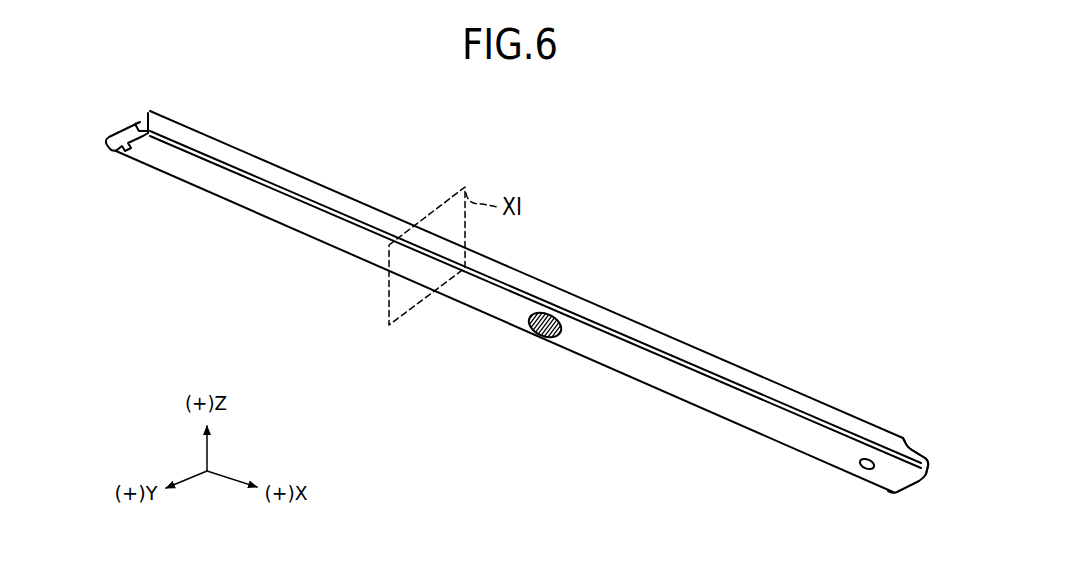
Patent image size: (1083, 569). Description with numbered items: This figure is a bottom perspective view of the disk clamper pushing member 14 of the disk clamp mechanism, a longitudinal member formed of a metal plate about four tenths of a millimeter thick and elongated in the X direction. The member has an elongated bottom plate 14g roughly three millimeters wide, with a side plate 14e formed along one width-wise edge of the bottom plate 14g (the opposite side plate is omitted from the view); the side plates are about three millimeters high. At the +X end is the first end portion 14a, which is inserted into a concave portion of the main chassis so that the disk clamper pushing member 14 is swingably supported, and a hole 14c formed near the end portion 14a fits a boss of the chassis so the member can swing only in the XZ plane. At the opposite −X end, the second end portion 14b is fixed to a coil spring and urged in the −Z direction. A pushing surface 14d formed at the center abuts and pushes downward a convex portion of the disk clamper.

The disk clamper pushing member 14 is at (667, 335).
The first end portion 14a is at (913, 452).
The second end portion 14b is at (138, 122).
The hole 14c is at (866, 471).
The pushing surface 14d is at (546, 337).
The side plate 14e is at (786, 388).
The bottom plate 14g is at (740, 417).